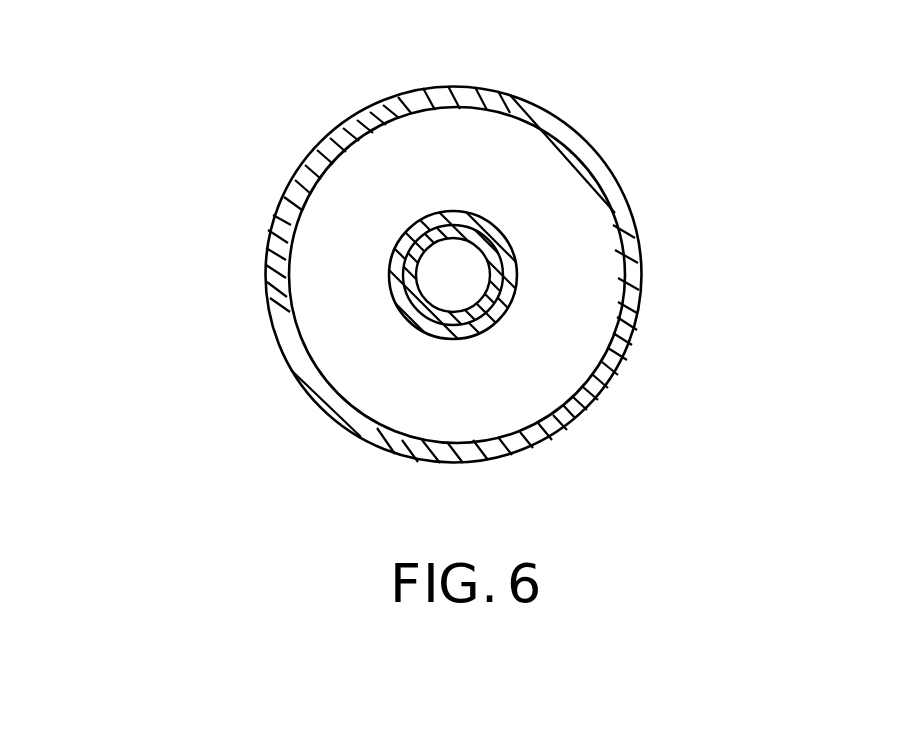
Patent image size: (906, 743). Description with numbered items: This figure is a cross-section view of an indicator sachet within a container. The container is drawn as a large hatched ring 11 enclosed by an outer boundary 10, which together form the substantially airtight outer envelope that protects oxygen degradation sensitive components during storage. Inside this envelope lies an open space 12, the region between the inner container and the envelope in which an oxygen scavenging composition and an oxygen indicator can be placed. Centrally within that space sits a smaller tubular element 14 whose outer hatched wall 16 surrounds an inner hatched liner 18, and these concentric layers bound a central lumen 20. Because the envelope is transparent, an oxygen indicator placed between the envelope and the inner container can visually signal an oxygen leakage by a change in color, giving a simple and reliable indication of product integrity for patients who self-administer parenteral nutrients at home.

The catheter body 10 is at (590, 410).
The outer tube wall 11 is at (627, 342).
The annular lumen 12 is at (353, 352).
The inner tube 14 is at (435, 215).
The inner tube wall 16 is at (468, 217).
The inner liner 18 is at (493, 263).
The central lumen 20 is at (430, 272).